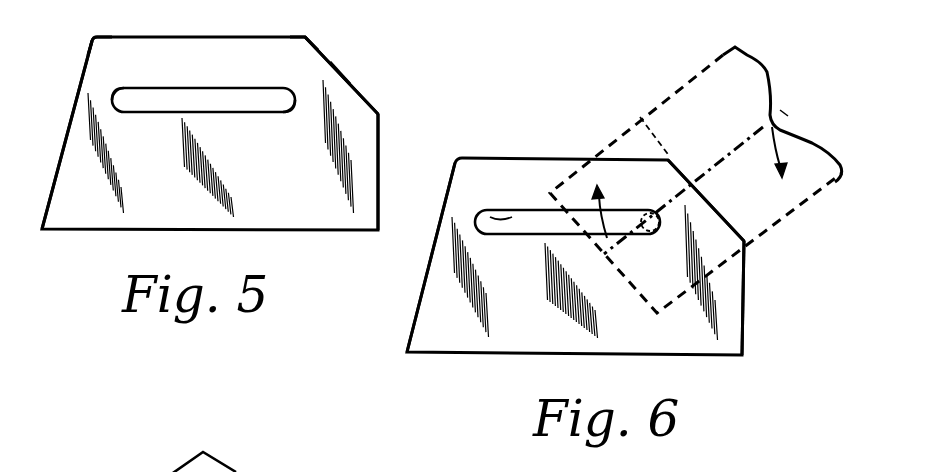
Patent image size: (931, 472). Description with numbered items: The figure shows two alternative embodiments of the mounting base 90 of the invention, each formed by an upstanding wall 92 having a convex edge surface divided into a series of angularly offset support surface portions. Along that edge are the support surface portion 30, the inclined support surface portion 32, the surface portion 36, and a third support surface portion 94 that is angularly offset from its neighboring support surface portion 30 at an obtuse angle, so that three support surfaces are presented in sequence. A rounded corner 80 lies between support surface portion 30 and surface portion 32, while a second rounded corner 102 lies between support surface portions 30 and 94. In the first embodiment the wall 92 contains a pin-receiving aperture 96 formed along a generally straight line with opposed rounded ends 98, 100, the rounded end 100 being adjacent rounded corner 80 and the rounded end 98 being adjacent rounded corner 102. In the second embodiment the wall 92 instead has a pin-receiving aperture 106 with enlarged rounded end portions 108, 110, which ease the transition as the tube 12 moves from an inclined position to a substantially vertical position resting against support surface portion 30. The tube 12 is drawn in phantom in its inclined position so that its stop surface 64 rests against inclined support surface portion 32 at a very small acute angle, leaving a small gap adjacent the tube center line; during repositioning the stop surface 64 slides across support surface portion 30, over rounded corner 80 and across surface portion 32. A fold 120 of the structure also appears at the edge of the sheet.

In FIG. 6, the tube 12 is at (697, 67).
In FIG. 5, the support surface portion 30 is at (172, 35).
In FIG. 6, the support surface portion 30 is at (552, 158).
In FIG. 5, the support surface portion 32 is at (367, 97).
In FIG. 6, the support surface portion 32 is at (717, 203).
In FIG. 5, the surface portion 36 is at (380, 128).
In FIG. 6, the surface portion 36 is at (743, 313).
In FIG. 6, the stop surface 64 is at (650, 123).
In FIG. 5, the rounded corner 80 is at (307, 38).
In FIG. 5, the base 90 is at (340, 72).
In FIG. 5, the upstanding wall 92 is at (90, 94).
In FIG. 6, the upstanding wall 92 is at (423, 307).
In FIG. 5, the third support surface portion 94 is at (78, 60).
In FIG. 6, the third support surface portion 94 is at (440, 203).
In FIG. 5, the pin-receiving aperture 96 is at (233, 100).
In FIG. 5, the rounded end 98 is at (107, 88).
In FIG. 5, the rounded end 100 is at (297, 107).
In FIG. 5, the rounded corner 102 is at (90, 37).
In FIG. 6, the pin-receiving aperture 106 is at (533, 223).
In FIG. 6, the enlarged rounded end portion 108 is at (520, 193).
In FIG. 6, the enlarged rounded end portion 110 is at (633, 237).
In FIG. 5, the fold 120 is at (240, 471).